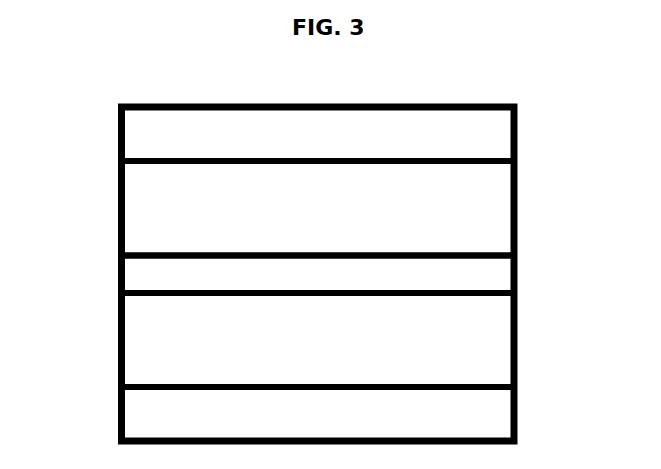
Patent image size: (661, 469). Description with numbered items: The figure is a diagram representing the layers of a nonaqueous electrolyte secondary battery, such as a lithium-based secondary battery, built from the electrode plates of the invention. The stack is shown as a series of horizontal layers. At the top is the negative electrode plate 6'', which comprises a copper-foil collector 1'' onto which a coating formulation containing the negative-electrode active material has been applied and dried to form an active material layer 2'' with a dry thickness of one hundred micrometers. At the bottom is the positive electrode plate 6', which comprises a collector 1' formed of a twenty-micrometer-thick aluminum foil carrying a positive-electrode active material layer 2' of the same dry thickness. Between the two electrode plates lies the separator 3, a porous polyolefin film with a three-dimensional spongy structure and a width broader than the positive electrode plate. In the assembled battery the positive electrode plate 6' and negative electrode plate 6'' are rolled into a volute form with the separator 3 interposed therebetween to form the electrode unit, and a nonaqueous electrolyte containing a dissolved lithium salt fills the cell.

The collector 1'' is at (377, 134).
The active material layer 2'' is at (377, 208).
The separator 3 is at (500, 272).
The active material layer 2' is at (375, 340).
The collector 1' is at (375, 414).
The negative electrode plate 6'' is at (265, 178).
The positive electrode plate 6' is at (265, 369).